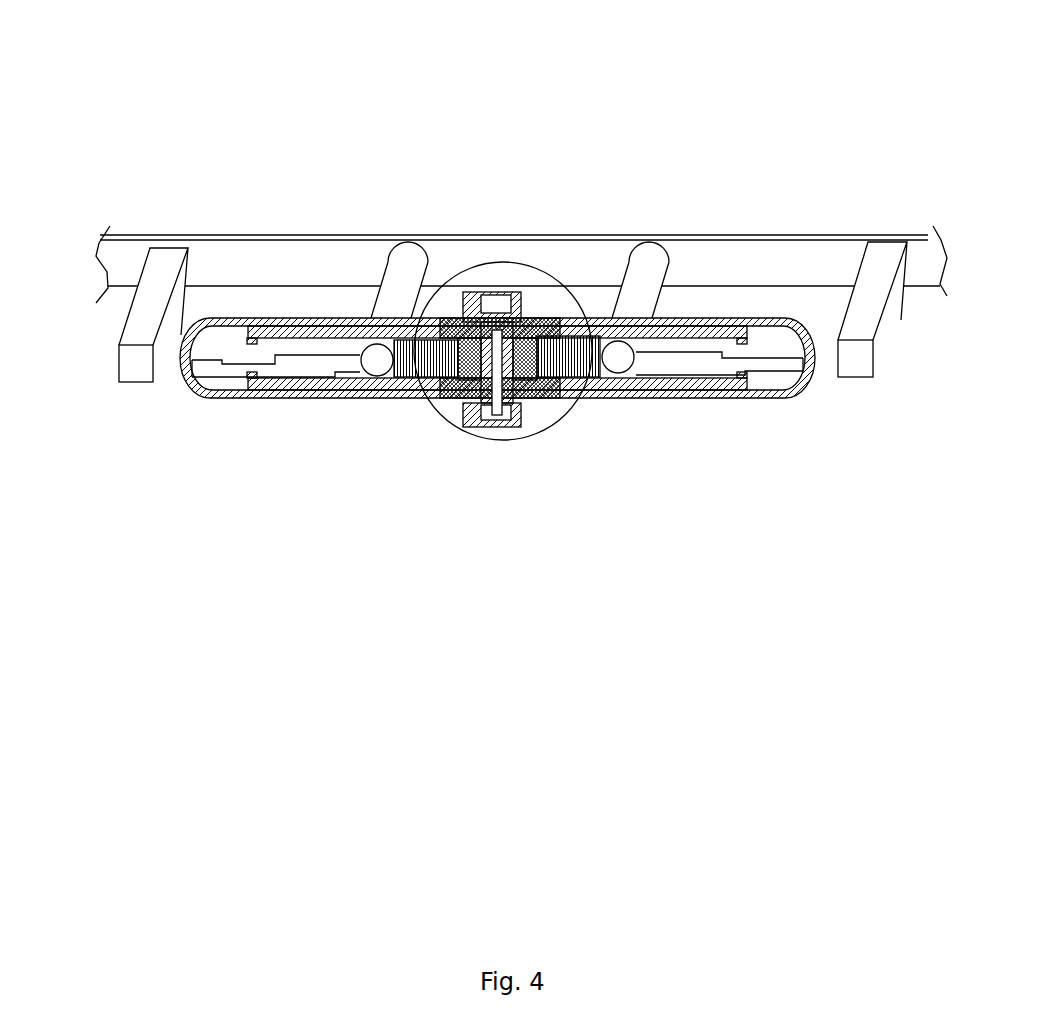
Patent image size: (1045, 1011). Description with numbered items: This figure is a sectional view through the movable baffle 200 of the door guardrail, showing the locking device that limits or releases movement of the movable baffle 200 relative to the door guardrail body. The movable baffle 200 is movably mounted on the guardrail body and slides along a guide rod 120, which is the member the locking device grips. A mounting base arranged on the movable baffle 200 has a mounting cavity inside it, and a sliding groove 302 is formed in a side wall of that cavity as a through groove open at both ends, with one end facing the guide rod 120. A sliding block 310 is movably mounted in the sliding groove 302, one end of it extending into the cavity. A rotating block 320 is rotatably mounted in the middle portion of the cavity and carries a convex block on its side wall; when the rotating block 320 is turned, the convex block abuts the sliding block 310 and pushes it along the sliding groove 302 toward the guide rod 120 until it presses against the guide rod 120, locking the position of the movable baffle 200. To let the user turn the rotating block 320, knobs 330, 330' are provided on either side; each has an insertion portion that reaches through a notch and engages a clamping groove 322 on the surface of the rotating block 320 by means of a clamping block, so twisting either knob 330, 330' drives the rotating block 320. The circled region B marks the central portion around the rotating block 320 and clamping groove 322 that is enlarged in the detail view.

The movable baffle 200 is at (187, 400).
The guide rod 120 is at (373, 368).
The sliding groove 302 is at (553, 322).
The sliding block 310 is at (420, 382).
The rotating block 320 is at (515, 407).
The clamping groove 322 is at (455, 310).
The knob 330 is at (324, 258).
The knob 330' is at (394, 564).
The detail region B is at (470, 265).